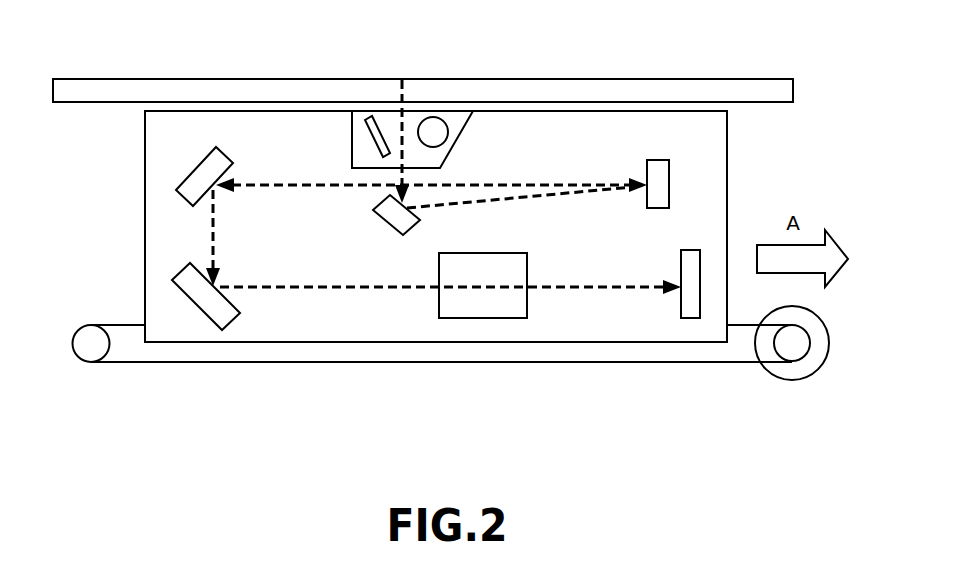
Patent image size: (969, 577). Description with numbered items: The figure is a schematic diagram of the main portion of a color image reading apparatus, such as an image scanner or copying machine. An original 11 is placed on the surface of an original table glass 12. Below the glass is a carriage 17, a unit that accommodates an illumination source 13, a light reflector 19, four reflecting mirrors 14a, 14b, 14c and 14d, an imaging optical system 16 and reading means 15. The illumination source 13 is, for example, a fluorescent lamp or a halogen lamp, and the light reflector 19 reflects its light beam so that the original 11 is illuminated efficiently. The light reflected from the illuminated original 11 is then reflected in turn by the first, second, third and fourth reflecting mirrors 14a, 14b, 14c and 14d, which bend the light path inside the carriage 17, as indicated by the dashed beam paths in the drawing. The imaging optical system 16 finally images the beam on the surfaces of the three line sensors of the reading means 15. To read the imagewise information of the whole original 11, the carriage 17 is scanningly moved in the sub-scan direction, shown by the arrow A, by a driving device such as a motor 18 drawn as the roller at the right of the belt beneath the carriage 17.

The original 11 is at (418, 80).
The original table glass 12 is at (673, 90).
The illumination source 13 is at (447, 122).
The first reflecting mirror 14a is at (381, 230).
The second reflecting mirror 14b is at (650, 160).
The third reflecting mirror 14c is at (185, 190).
The fourth reflecting mirror 14d is at (212, 313).
The reading means 15 is at (688, 320).
The imaging optical system 16 is at (493, 318).
The carriage 17 is at (727, 160).
The motor 18 is at (795, 380).
The light reflector 19 is at (365, 132).